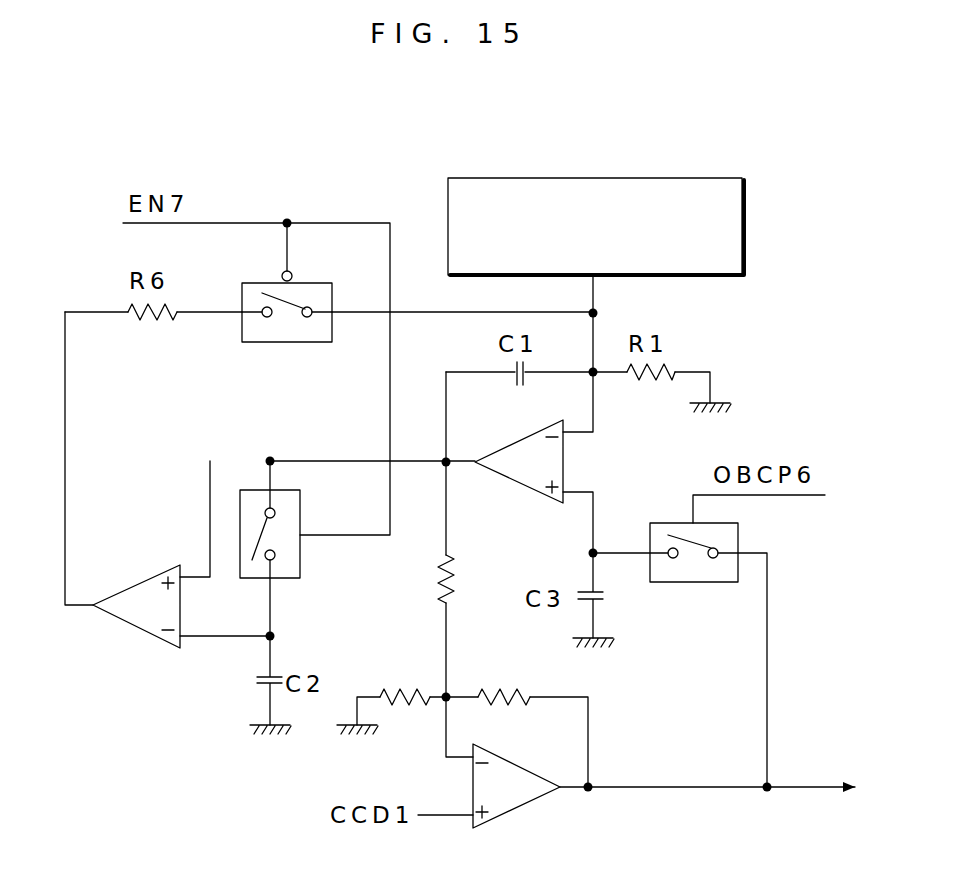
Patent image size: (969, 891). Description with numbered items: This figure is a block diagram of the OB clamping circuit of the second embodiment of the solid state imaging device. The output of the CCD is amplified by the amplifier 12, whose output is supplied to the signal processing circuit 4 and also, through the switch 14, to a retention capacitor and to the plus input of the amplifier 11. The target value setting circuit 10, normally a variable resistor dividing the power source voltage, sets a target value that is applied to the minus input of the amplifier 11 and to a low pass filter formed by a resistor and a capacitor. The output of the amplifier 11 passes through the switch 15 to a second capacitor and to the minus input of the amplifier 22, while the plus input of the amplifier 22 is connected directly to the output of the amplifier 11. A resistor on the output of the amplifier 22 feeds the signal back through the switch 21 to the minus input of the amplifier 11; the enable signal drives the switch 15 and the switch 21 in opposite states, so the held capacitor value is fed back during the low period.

The target value setting circuit 10 is at (678, 178).
The switch 21 is at (317, 342).
The switch 15 is at (300, 557).
The switch 14 is at (708, 582).
The amplifier 11 is at (512, 482).
The amplifier 22 is at (128, 627).
The amplifier 12 is at (515, 810).
The signal processing circuit 4 is at (714, 829).